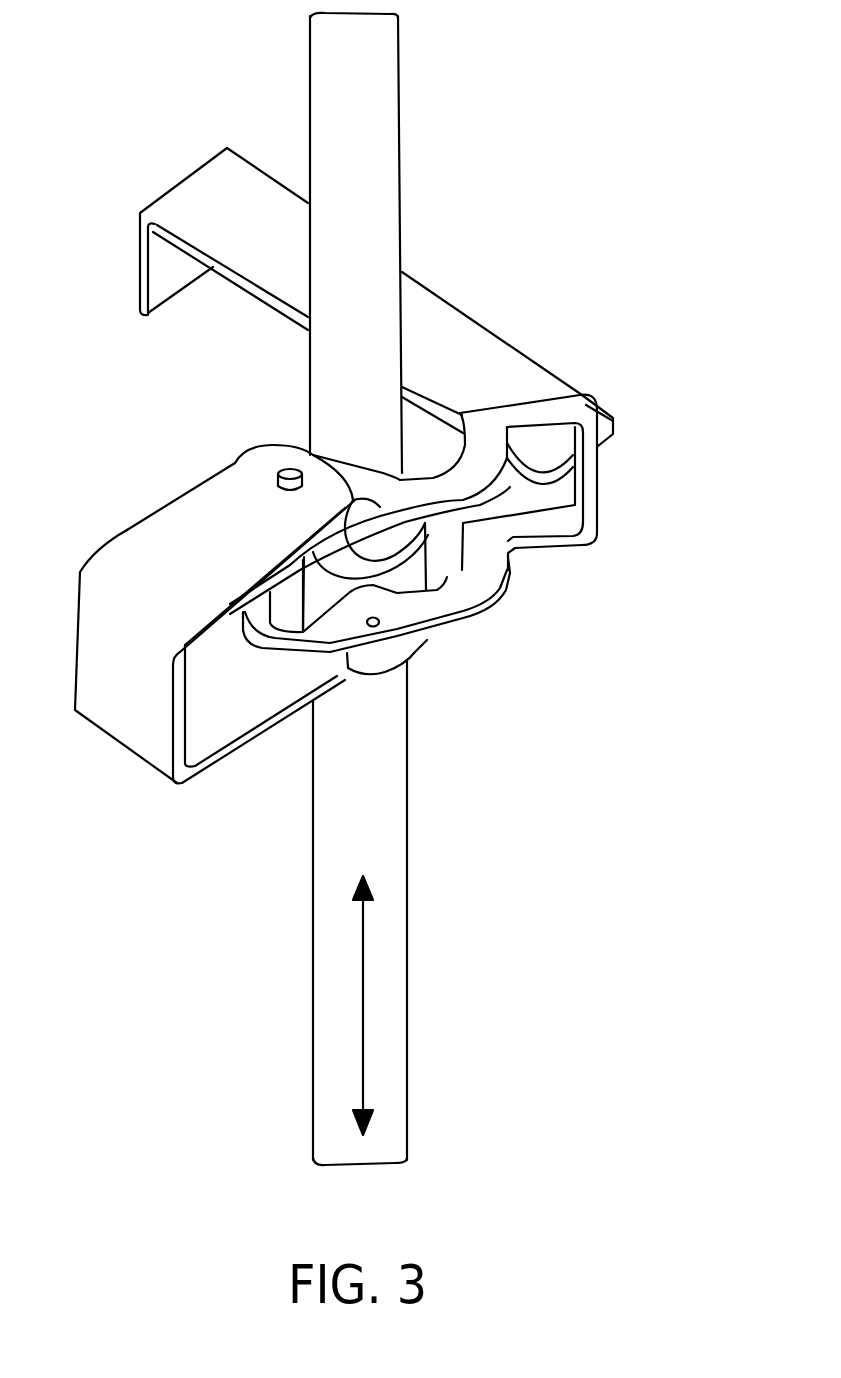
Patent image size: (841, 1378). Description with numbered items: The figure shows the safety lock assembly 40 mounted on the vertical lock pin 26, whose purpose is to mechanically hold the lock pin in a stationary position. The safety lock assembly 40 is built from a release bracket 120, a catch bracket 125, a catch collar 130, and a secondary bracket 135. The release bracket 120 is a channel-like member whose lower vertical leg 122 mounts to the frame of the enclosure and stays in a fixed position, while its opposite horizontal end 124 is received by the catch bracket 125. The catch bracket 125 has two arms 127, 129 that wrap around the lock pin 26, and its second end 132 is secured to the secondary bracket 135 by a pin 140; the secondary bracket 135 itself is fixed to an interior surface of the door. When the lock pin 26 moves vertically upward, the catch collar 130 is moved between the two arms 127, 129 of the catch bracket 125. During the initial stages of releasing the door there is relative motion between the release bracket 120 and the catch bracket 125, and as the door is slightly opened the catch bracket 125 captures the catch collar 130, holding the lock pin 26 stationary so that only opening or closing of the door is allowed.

The lock pin 26 is at (330, 902).
The safety lock assembly 40 is at (60, 798).
The release bracket 120 is at (380, 297).
The lower vertical leg 122 is at (145, 272).
The horizontal end 124 is at (613, 415).
The catch bracket 125 is at (347, 503).
The arm 127 is at (450, 635).
The arm 129 is at (423, 487).
The catch collar 130 is at (417, 578).
The second end of the catch bracket 132 is at (275, 637).
The secondary bracket 135 is at (140, 598).
The pin 140 is at (278, 482).